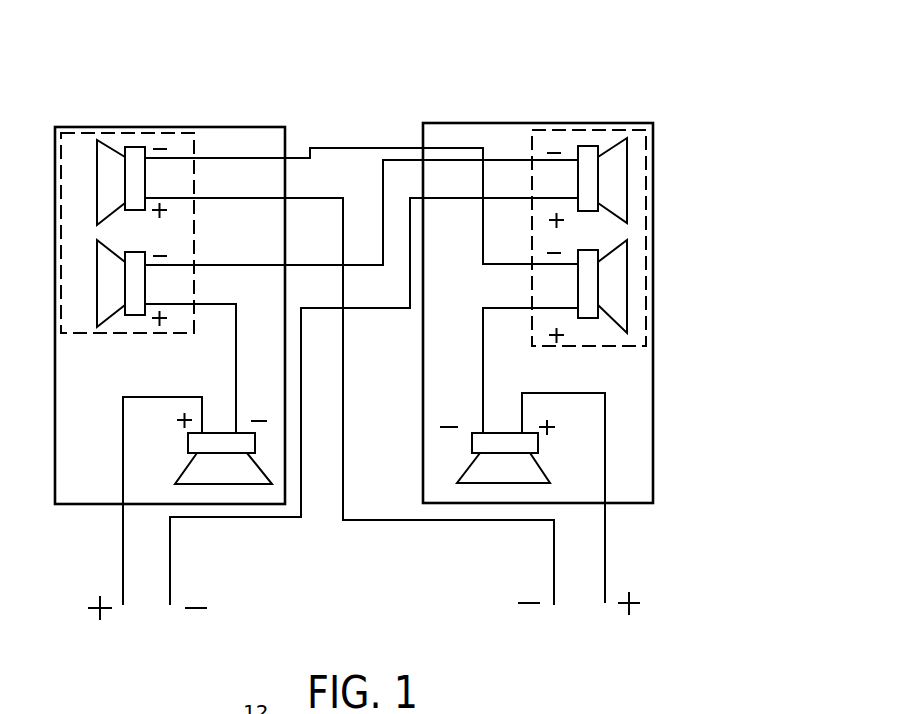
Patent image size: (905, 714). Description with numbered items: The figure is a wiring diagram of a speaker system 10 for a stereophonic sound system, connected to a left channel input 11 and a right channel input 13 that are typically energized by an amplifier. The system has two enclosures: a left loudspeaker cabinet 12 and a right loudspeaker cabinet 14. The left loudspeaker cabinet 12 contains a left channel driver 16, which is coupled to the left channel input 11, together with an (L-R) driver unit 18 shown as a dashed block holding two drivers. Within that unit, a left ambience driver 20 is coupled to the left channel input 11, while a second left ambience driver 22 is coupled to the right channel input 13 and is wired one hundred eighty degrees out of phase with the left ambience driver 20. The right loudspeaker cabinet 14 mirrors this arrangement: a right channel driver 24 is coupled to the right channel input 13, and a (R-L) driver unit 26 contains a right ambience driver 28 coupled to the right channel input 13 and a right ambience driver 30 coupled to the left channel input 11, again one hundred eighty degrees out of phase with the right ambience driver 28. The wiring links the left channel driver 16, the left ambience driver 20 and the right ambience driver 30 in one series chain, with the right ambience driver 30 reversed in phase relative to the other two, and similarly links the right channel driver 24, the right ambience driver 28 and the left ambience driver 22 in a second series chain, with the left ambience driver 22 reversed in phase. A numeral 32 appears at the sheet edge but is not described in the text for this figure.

The speaker system 10 is at (556, 60).
The left channel input 11 is at (147, 577).
The left loudspeaker cabinet 12 is at (267, 125).
The right channel input 13 is at (580, 552).
The right loudspeaker cabinet 14 is at (623, 123).
The left channel driver 16 is at (188, 465).
The (L-R) driver unit 18 is at (195, 142).
The left ambience driver 20 is at (105, 243).
The left ambience driver 22 is at (108, 148).
The right channel driver 24 is at (542, 465).
The (R-L) driver unit 26 is at (547, 132).
The right ambience driver 28 is at (618, 245).
The right ambience driver 30 is at (618, 142).
The element of following figure (cut off) 32 is at (137, 706).